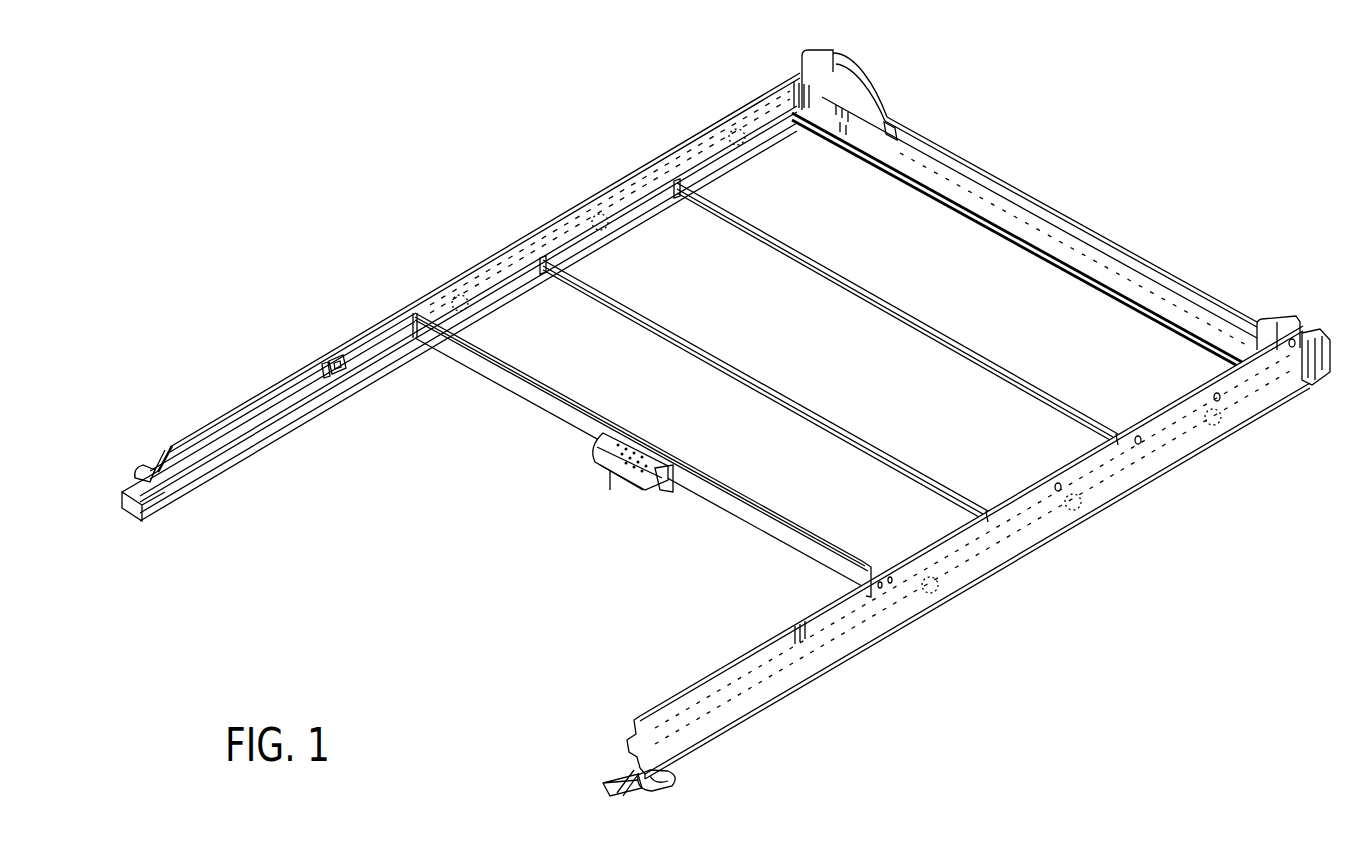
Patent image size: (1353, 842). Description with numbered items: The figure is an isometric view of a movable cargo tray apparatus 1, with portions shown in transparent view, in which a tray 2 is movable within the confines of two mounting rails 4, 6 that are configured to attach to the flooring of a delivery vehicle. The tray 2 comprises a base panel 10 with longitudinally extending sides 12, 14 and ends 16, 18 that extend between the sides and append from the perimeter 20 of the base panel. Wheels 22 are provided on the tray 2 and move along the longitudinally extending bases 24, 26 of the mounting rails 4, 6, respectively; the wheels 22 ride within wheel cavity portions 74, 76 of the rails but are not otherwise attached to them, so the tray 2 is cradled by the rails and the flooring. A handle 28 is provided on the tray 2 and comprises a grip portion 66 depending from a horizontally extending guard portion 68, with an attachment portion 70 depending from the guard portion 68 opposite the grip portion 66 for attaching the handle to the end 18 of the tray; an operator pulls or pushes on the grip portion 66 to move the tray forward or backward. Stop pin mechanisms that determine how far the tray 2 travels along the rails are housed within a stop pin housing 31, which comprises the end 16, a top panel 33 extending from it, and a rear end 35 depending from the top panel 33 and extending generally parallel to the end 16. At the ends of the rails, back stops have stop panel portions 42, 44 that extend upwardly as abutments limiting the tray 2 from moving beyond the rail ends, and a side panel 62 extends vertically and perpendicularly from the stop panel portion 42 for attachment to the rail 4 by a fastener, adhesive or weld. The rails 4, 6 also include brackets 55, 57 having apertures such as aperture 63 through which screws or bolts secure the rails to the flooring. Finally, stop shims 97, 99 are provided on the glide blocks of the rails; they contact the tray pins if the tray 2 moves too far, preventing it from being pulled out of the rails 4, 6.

The movable cargo tray apparatus 1 is at (434, 159).
The tray 2 is at (1035, 172).
The mounting rail 4 is at (305, 327).
The mounting rail 6 is at (1313, 331).
The base panel 10 is at (830, 348).
The longitudinally extending side 12 is at (505, 270).
The longitudinally extending side 14 is at (912, 548).
The end 16 is at (1043, 240).
The end 18 is at (780, 533).
The perimeter 20 is at (970, 212).
The wheels 22 is at (742, 150).
The longitudinally extending base 24 is at (244, 452).
The longitudinally extending base 26 is at (604, 787).
The handle 28 is at (597, 488).
The stop pin housing 31 is at (1163, 273).
The top panel 33 is at (1102, 245).
The rear end 35 is at (1270, 312).
The stop panel portion 42 is at (850, 80).
The stop panel portion 44 is at (1290, 322).
The bracket 55 is at (138, 476).
The bracket 57 is at (646, 792).
The side panel 62 is at (812, 52).
The aperture 63 is at (680, 778).
The grip portion 66 is at (636, 483).
The guard portion 68 is at (594, 440).
The attachment portion 70 is at (664, 482).
The wheel cavity portion 74 is at (213, 480).
The wheel cavity portion 76 is at (612, 755).
The stop shim 97 is at (346, 372).
The stop shim 99 is at (815, 615).